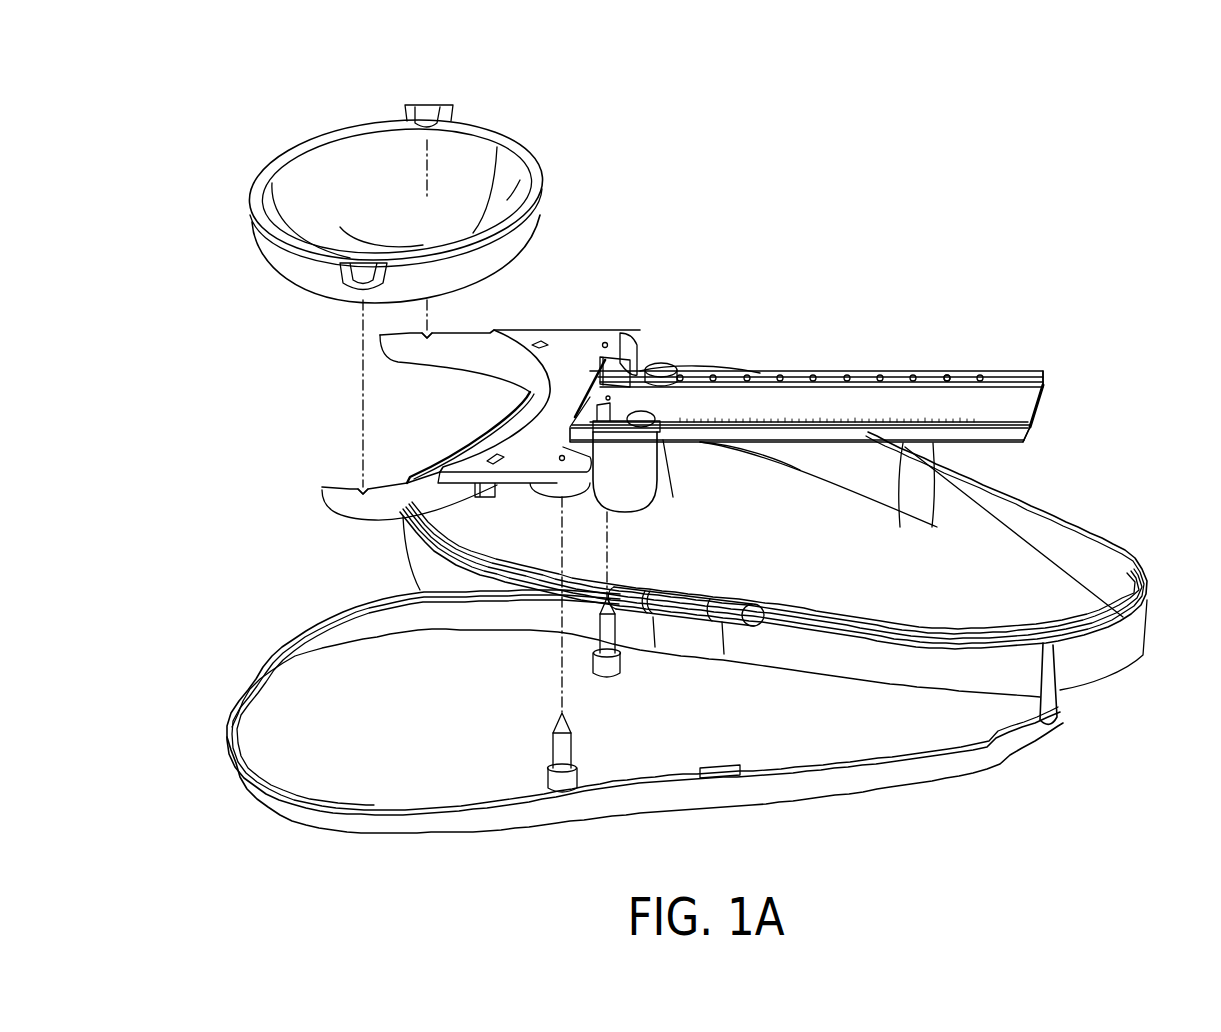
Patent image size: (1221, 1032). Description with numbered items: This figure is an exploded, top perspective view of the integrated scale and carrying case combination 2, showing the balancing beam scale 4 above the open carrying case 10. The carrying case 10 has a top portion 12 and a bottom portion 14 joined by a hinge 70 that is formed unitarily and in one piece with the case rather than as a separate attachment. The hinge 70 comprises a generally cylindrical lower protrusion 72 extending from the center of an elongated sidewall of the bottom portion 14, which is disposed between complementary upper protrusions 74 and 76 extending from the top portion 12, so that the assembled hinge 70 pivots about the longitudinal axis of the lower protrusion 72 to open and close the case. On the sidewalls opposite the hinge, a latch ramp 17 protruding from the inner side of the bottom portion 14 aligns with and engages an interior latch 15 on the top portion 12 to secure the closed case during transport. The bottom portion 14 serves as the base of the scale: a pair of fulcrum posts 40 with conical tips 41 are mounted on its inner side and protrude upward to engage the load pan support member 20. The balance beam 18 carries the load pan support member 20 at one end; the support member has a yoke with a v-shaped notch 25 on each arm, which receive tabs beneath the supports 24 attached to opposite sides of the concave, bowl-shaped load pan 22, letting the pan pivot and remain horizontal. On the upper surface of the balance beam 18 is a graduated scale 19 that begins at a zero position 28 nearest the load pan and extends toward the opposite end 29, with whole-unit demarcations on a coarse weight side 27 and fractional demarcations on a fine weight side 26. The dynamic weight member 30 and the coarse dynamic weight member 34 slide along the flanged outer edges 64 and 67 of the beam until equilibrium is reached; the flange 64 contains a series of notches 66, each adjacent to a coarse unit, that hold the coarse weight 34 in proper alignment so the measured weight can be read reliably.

The integrated scale and carrying case combination 2 is at (247, 404).
The balancing beam scale 4 is at (772, 370).
The carrying case 10 is at (1062, 728).
The top portion 12 is at (475, 548).
The bottom portion 14 is at (289, 758).
The interior latch 15 is at (907, 485).
The latch ramp 17 is at (717, 767).
The balance beam 18 is at (784, 443).
The graduated scale 19 is at (957, 390).
The load pan support member 20 is at (557, 362).
The load pan 22 is at (313, 197).
The supports 24 is at (428, 105).
The v-shaped notch 25 is at (428, 330).
The fine weight side 26 is at (840, 440).
The coarse weight side 27 is at (827, 392).
The zero position 28 is at (609, 396).
The opposite end 29 is at (1037, 417).
The dynamic weight member 30 is at (633, 495).
The coarse dynamic weight member 34 is at (658, 363).
The fulcrum posts 40 is at (568, 757).
The conical tips 41 is at (556, 731).
The flange 64 is at (1040, 372).
The notches 66 is at (850, 373).
The flanged outer edge 67 is at (1017, 437).
The hinge 70 is at (687, 593).
The lower protrusion 72 is at (700, 603).
The upper protrusion 74 is at (640, 597).
The upper protrusion 76 is at (735, 617).